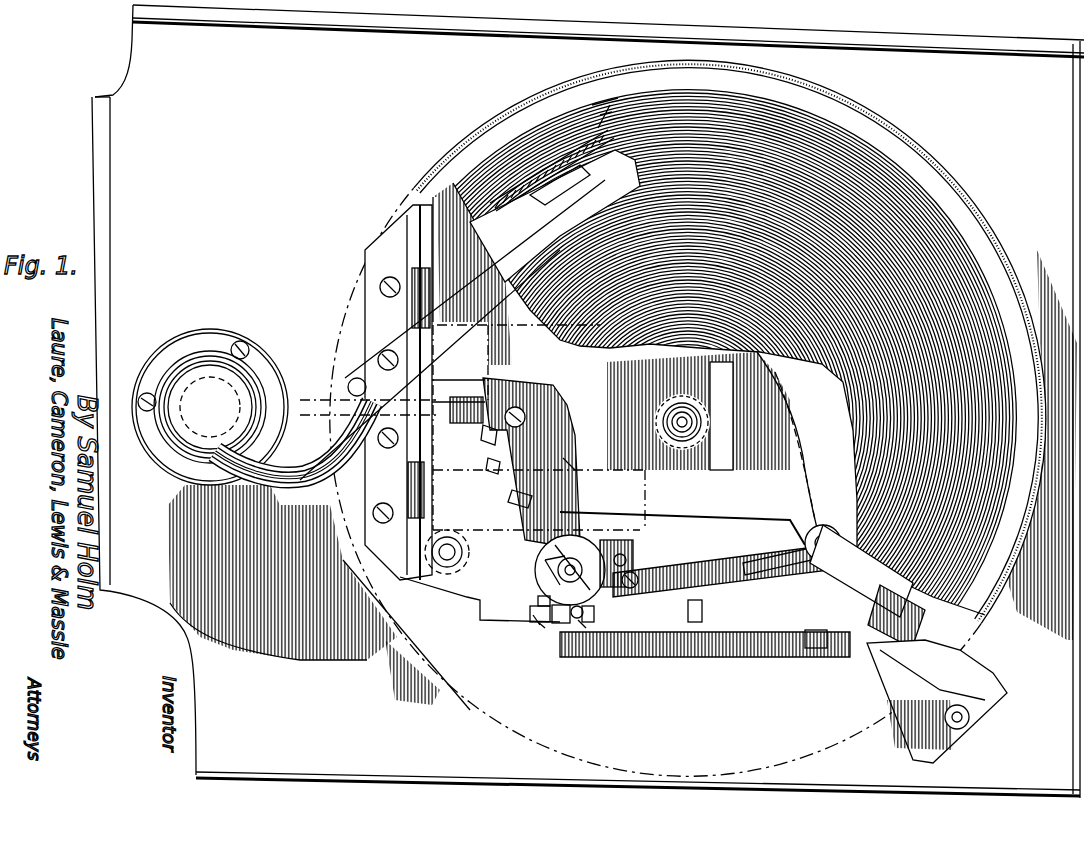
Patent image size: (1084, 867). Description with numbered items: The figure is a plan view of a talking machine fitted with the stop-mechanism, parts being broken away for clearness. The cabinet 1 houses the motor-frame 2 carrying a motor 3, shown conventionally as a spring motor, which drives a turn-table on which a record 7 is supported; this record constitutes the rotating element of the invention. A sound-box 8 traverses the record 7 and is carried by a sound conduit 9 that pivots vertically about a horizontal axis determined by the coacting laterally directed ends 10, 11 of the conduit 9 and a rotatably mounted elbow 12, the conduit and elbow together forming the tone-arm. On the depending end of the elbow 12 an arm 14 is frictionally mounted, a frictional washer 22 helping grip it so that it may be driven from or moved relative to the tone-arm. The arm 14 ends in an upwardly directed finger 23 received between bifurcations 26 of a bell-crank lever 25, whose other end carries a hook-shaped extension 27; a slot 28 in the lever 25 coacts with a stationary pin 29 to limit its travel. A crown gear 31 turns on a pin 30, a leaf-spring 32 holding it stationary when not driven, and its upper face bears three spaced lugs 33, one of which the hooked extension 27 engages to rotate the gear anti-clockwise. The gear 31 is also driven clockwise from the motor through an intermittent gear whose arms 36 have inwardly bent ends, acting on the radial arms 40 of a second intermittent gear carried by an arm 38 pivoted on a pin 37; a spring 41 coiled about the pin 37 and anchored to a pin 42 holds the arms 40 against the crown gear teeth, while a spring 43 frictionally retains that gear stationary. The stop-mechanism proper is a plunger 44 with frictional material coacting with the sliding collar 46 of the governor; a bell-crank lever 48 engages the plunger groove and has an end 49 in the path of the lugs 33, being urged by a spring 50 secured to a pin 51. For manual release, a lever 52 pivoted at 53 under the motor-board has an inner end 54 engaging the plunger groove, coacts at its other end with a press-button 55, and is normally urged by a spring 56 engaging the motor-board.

The cabinet 1 is at (588, 401).
The motor-frame 2 is at (668, 504).
The motor 3 is at (660, 446).
The record 7 is at (955, 213).
The sound-box 8 is at (521, 134).
The sound conduit 9 is at (361, 383).
The laterally directed end of conduit 10 is at (260, 482).
The laterally directed end of elbow 11 is at (234, 390).
The elbow 12 is at (182, 422).
The arm 14 is at (352, 365).
The frictional washer 22 is at (483, 434).
The finger 23 is at (458, 402).
The bell-crank lever 25 is at (488, 468).
The bifurcations 26 is at (500, 379).
The hook-shaped extension 27 is at (540, 623).
The slot 28 is at (567, 462).
The pin 29 is at (512, 500).
The pin 30 is at (592, 540).
The crown gear 31 is at (587, 594).
The leaf-spring 32 is at (520, 574).
The lugs 33 is at (563, 558).
The arms of intermittent gear 36 is at (540, 602).
The pin 37 is at (536, 618).
The arm 38 is at (575, 619).
The radial arms 40 is at (588, 623).
The spring 41 is at (545, 612).
The pin 42 is at (565, 620).
The spring 43 is at (580, 623).
The plunger 44 is at (721, 657).
The sliding collar 46 is at (813, 523).
The bell-crank lever 48 is at (677, 584).
The end of lever 49 is at (620, 554).
The spring 50 is at (693, 623).
The pin 51 is at (677, 526).
The lever 52 is at (864, 658).
The pivot 53 is at (920, 624).
The inner end of lever 54 is at (800, 538).
The press-button 55 is at (957, 731).
The spring 56 is at (810, 650).